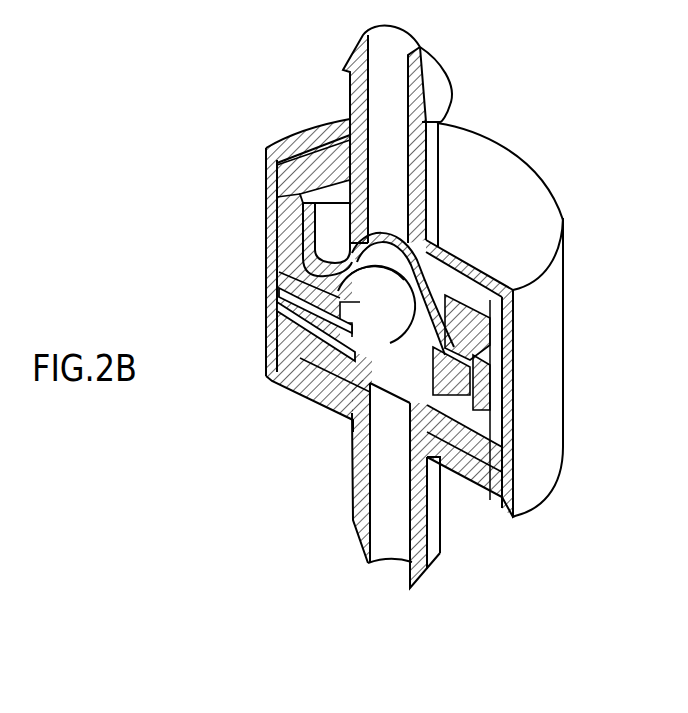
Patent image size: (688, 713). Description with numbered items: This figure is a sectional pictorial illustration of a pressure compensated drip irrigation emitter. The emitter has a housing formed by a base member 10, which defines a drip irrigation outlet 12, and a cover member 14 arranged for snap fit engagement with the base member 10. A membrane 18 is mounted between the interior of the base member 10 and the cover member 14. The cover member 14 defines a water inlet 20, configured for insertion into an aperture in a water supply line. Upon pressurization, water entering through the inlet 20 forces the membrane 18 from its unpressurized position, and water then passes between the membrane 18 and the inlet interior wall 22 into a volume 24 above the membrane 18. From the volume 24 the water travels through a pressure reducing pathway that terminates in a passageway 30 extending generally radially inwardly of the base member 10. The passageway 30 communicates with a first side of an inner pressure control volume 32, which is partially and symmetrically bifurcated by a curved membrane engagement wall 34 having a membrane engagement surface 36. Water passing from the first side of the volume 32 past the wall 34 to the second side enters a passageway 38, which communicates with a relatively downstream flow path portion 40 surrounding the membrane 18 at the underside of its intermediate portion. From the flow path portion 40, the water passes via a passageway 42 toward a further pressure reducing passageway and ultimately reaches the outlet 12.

The base member 10 is at (484, 542).
The drip irrigation outlet 12 is at (358, 487).
The cover member 14 is at (563, 146).
The membrane 18 is at (297, 232).
The water inlet 20 is at (297, 190).
The wall 22 is at (445, 252).
The volume 24 is at (350, 122).
The passageway 30 is at (280, 334).
The inner pressure control volume 32 is at (300, 280).
The curved membrane engagement wall 34 is at (408, 397).
The membrane engagement surface 36 is at (330, 378).
The passageway 38 is at (493, 457).
The downstream flow path portion 40 is at (282, 244).
The passageway 42 is at (493, 360).